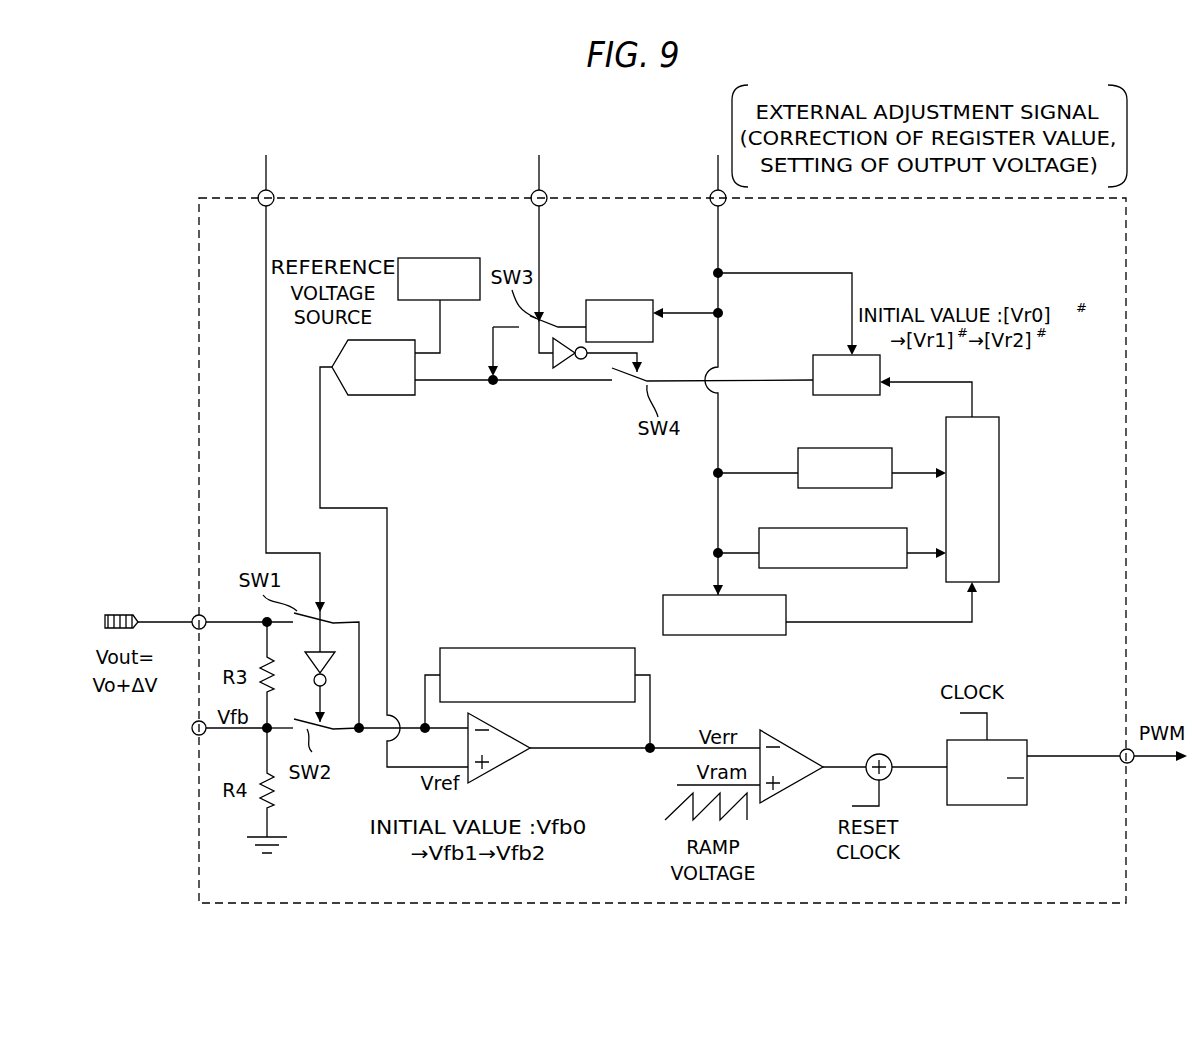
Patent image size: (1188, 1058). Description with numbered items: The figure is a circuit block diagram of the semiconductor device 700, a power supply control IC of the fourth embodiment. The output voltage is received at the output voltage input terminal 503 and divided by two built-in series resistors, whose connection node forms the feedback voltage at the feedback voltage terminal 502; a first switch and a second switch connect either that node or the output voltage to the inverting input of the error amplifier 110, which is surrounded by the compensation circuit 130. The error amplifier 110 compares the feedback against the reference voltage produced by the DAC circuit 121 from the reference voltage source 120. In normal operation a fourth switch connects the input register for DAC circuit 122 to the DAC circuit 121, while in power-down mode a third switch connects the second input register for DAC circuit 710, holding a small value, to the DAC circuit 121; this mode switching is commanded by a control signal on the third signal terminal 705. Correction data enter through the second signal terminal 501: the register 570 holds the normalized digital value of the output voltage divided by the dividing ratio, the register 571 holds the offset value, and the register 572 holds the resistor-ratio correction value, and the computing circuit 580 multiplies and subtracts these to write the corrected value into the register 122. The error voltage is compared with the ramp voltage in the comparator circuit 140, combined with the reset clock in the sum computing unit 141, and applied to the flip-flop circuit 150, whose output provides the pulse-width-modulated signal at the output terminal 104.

The semiconductor device 700 is at (402, 196).
The third signal terminal 705 is at (533, 188).
The second signal terminal 501 is at (712, 188).
The reference voltage source 120 is at (441, 257).
The DAC circuit 121 is at (382, 396).
The second input register for DAC circuit 710 is at (621, 299).
The input register for DAC circuit 122 is at (826, 354).
The register 571 is at (805, 447).
The register 572 is at (780, 527).
The register 570 is at (713, 636).
The computing circuit 580 is at (999, 507).
The output voltage input terminal 503 is at (194, 616).
The feedback voltage terminal 502 is at (192, 728).
The compensation circuit 130 is at (547, 647).
The error amplifier 110 is at (510, 762).
The comparator circuit 140 is at (802, 747).
The sum computing unit 141 is at (879, 753).
The flip-flop circuit 150 is at (988, 806).
The PWM output terminal 104 is at (1132, 760).